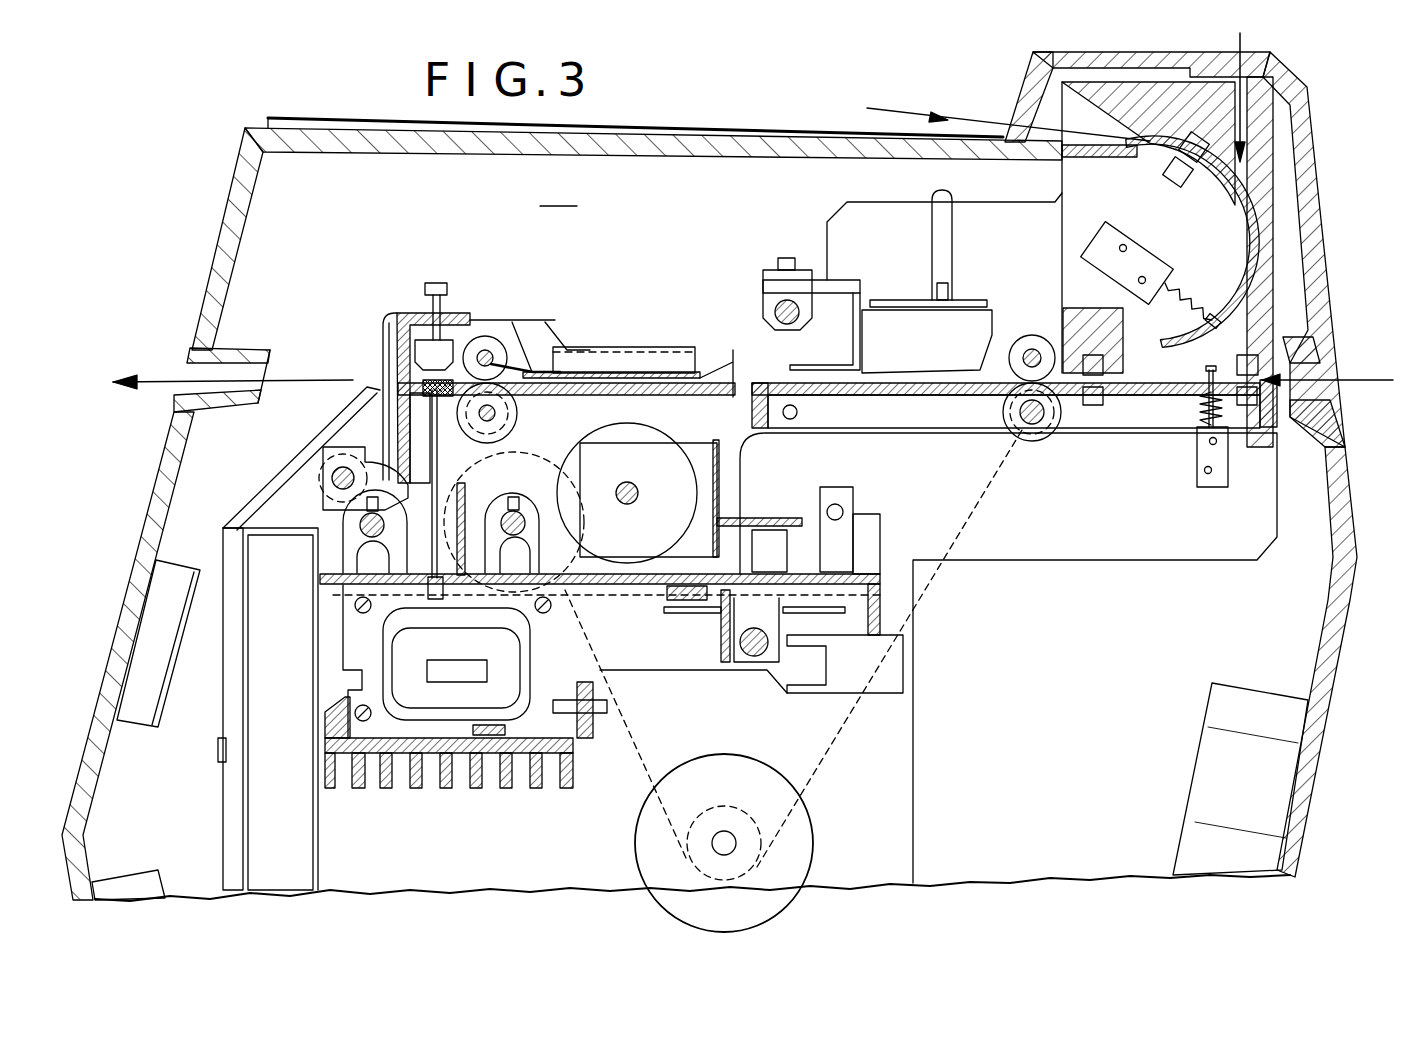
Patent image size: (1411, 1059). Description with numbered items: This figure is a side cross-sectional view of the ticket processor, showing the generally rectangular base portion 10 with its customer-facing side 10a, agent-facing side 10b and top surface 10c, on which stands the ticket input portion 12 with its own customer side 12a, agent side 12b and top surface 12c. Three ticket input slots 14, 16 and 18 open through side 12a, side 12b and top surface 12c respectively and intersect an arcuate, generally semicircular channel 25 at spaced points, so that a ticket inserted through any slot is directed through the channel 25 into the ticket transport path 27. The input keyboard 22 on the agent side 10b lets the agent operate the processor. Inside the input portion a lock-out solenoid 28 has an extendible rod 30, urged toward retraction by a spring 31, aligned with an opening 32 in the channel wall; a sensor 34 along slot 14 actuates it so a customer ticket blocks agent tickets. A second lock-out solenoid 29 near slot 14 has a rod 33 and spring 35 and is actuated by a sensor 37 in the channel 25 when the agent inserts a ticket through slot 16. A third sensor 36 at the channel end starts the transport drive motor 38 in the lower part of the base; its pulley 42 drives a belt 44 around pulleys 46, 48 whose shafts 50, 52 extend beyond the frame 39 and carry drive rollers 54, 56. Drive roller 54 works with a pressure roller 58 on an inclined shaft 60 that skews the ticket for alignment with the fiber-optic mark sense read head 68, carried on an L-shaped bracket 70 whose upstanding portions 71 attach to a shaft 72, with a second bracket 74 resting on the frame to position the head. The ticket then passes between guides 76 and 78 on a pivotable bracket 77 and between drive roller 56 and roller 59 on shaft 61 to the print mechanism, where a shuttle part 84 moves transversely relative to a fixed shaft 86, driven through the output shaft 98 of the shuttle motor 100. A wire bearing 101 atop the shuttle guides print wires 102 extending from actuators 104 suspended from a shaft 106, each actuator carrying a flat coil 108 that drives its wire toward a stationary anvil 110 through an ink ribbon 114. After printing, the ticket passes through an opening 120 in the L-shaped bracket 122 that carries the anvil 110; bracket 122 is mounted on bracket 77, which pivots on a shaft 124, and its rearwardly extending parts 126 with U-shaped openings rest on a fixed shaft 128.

The base portion 10 is at (735, 492).
The side of base portion 10a is at (1337, 498).
The side of base portion 10b is at (233, 212).
The top surface of base portion 10c is at (690, 128).
The ticket input portion 12 is at (1172, 235).
The side of input portion 12a is at (1318, 182).
The side of input portion 12b is at (1015, 100).
The top surface of input portion 12c is at (1140, 52).
The ticket input slot 14 is at (1318, 352).
The ticket input slot 16 is at (1005, 112).
The ticket input slot 18 is at (1217, 62).
The input keyboard 22 is at (137, 715).
The arcuate channel 25 is at (1195, 185).
The ticket transport path 27 is at (1068, 308).
The ticket lock-out solenoid 28 is at (1062, 245).
The second ticket lock-out solenoid 29 is at (1213, 487).
The extendible rod 30 is at (1143, 252).
The spring 31 is at (1198, 290).
The opening 32 is at (1210, 322).
The extendible rod 33 is at (1207, 395).
The sensor 34 is at (1248, 406).
The spring 35 is at (1200, 430).
The third ticket sensor 36 is at (1093, 406).
The sensor 37 is at (1162, 175).
The transport drive motor 38 is at (682, 778).
The frame 39 is at (558, 192).
The pulley 42 is at (740, 806).
The belt 44 is at (1010, 528).
The pulley 46 is at (1022, 420).
The pulley 48 is at (500, 418).
The shaft 50 is at (1040, 442).
The shaft 52 is at (540, 380).
The drive roller 54 is at (1020, 418).
The drive roller 56 is at (560, 470).
The pressure roller 58 is at (1030, 345).
The roller 59 is at (490, 352).
The shaft 60 is at (1022, 360).
The shaft 61 is at (484, 348).
The fiber-optic mark sense read head 68 is at (912, 308).
The L-shaped bracket 70 is at (852, 290).
The upstanding portions 71 is at (762, 290).
The shaft 72 is at (784, 300).
The second bracket 74 is at (935, 215).
The guide 76 is at (722, 370).
The pivotable bracket 77 is at (545, 318).
The guide 78 is at (680, 398).
The shuttle part 84 is at (365, 405).
The shaft 86 is at (360, 522).
The output shaft 98 is at (634, 488).
The shuttle motor 100 is at (608, 541).
The wire bearing 101 is at (420, 386).
The print wires 102 is at (338, 455).
The actuator 104 is at (412, 662).
The shaft 106 is at (750, 660).
The flat coil 108 is at (383, 652).
The anvil 110 is at (396, 318).
The ink ribbon 114 is at (415, 352).
The opening 120 is at (432, 388).
The L-shaped bracket 122 is at (408, 313).
The shaft 124 is at (660, 348).
The rearwardly extending parts 126 is at (330, 470).
The fixed shaft 128 is at (318, 482).